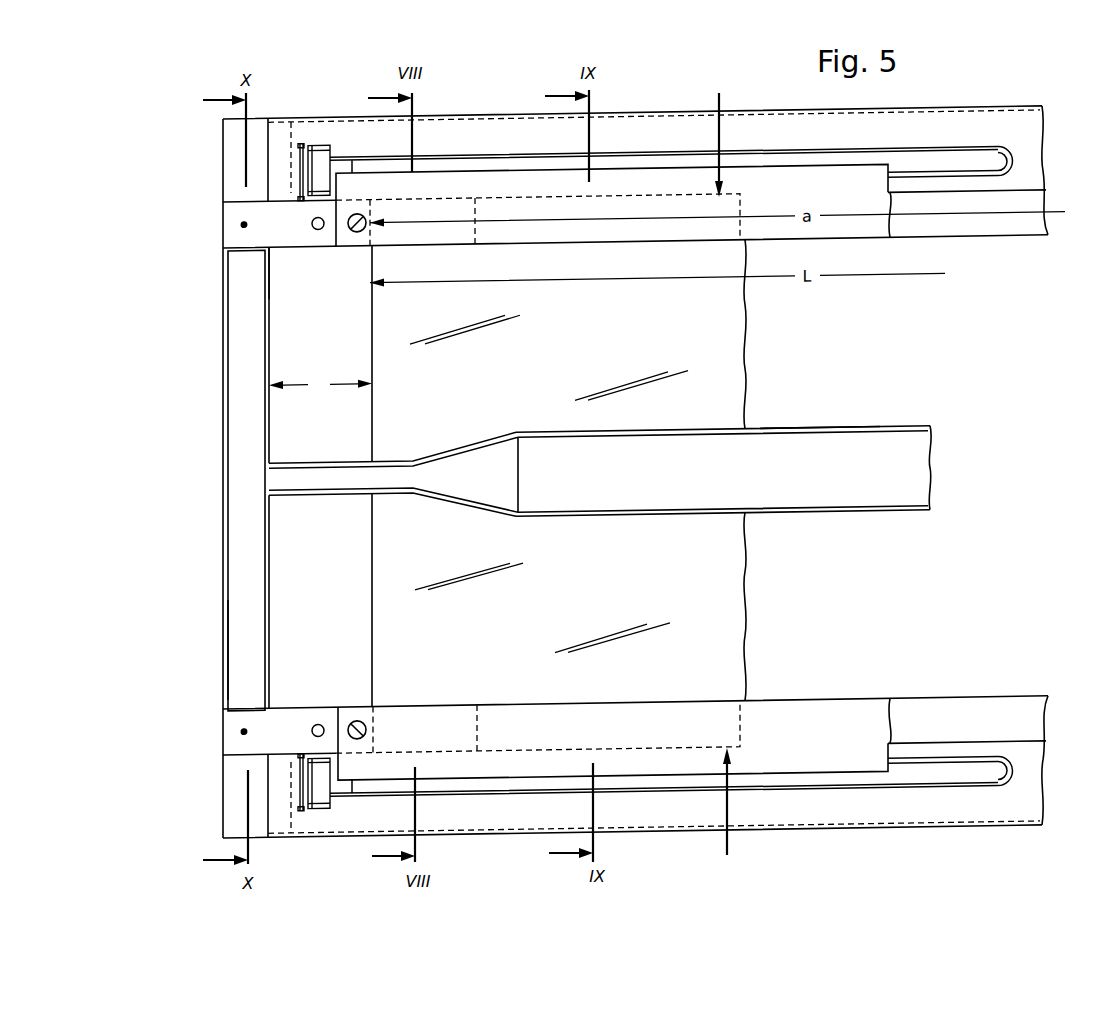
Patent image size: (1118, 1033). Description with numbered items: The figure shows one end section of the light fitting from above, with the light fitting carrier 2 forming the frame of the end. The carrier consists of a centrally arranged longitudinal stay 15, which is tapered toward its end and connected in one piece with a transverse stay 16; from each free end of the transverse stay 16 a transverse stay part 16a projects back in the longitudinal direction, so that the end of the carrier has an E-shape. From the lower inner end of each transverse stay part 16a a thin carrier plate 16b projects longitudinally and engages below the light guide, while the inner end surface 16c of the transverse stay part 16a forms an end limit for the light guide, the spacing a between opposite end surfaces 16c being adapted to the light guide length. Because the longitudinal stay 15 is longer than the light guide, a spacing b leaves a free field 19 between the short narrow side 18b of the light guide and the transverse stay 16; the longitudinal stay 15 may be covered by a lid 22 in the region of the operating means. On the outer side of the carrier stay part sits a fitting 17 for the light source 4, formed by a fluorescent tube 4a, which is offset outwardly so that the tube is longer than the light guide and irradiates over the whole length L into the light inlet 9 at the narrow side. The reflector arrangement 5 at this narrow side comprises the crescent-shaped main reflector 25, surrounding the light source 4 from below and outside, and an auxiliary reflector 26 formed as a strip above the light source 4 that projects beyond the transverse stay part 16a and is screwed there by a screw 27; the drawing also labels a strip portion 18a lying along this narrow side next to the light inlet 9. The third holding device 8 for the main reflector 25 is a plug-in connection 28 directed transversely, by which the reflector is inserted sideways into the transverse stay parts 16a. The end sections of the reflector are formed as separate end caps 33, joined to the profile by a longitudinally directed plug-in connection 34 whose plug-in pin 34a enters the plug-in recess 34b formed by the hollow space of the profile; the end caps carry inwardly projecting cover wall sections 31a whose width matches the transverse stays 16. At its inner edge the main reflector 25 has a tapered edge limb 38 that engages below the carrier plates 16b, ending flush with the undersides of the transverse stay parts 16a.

The light fitting carrier 2 is at (218, 629).
The light source 4 is at (671, 492).
The fluorescent tube 4a is at (905, 162).
The reflector arrangement 5 is at (1050, 146).
The third holding device 8 is at (230, 477).
The plug-in connection 28 is at (214, 207).
The light inlet 9 is at (722, 97).
The longitudinal stay 15 is at (824, 424).
The transverse stay 16 is at (222, 393).
The transverse stay part 16a is at (285, 244).
The carrier plate 16b is at (445, 203).
The inner end surface 16c is at (372, 213).
The fitting 17 is at (314, 190).
The clamping strip 18a is at (668, 197).
The short narrow side 18b is at (372, 588).
The free field 19 is at (312, 353).
The lid 22 is at (893, 438).
The main reflector 25 is at (1008, 113).
The auxiliary reflector 26 is at (812, 173).
The screw 27 is at (354, 235).
The cover wall section 31a is at (222, 137).
The end cap 33 is at (215, 166).
The plug-in connection 34 is at (287, 108).
The plug-in pin 34a is at (279, 173).
The plug-in recess 34b is at (283, 122).
The edge limb 38 is at (1002, 222).